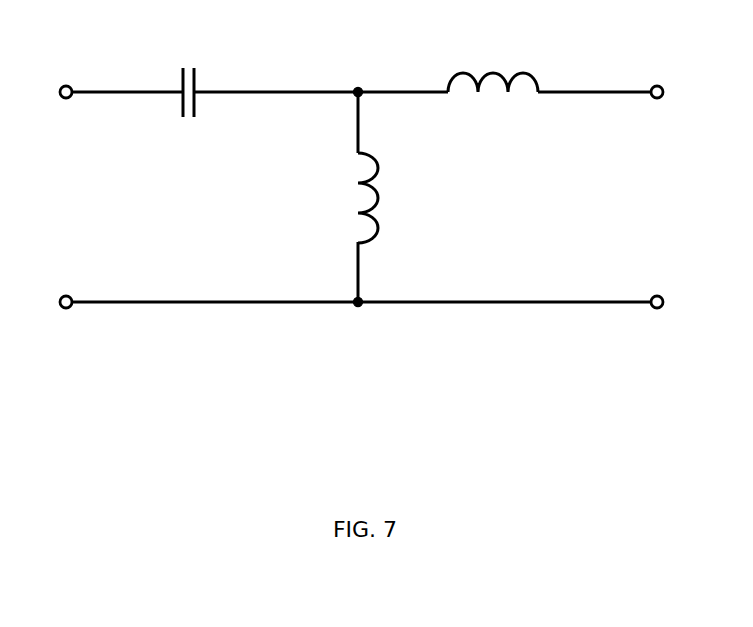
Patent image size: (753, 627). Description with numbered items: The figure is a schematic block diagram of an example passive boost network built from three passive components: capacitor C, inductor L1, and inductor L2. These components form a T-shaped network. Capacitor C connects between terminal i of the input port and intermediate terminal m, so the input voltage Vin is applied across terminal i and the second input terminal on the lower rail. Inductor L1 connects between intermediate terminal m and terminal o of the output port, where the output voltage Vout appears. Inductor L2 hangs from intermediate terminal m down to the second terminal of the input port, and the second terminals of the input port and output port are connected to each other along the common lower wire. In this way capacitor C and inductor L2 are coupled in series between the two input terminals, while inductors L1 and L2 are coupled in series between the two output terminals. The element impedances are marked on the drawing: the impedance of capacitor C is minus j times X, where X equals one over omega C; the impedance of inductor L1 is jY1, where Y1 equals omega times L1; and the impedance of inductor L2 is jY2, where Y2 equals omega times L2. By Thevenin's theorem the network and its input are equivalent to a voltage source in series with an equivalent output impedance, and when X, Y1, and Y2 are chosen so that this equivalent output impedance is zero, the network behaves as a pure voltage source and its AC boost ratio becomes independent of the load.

The terminal of the input port i is at (50, 194).
The terminal of the output port o is at (679, 194).
The capacitor C is at (186, 75).
The intermediate terminal m is at (361, 180).
The inductor L1 is at (493, 63).
The impedance of inductor L1 jY1 is at (493, 111).
The inductor L2 is at (392, 198).
The impedance of inductor L2 jY2 is at (322, 197).
The input voltage Vin is at (86, 197).
The output voltage Vout is at (636, 197).